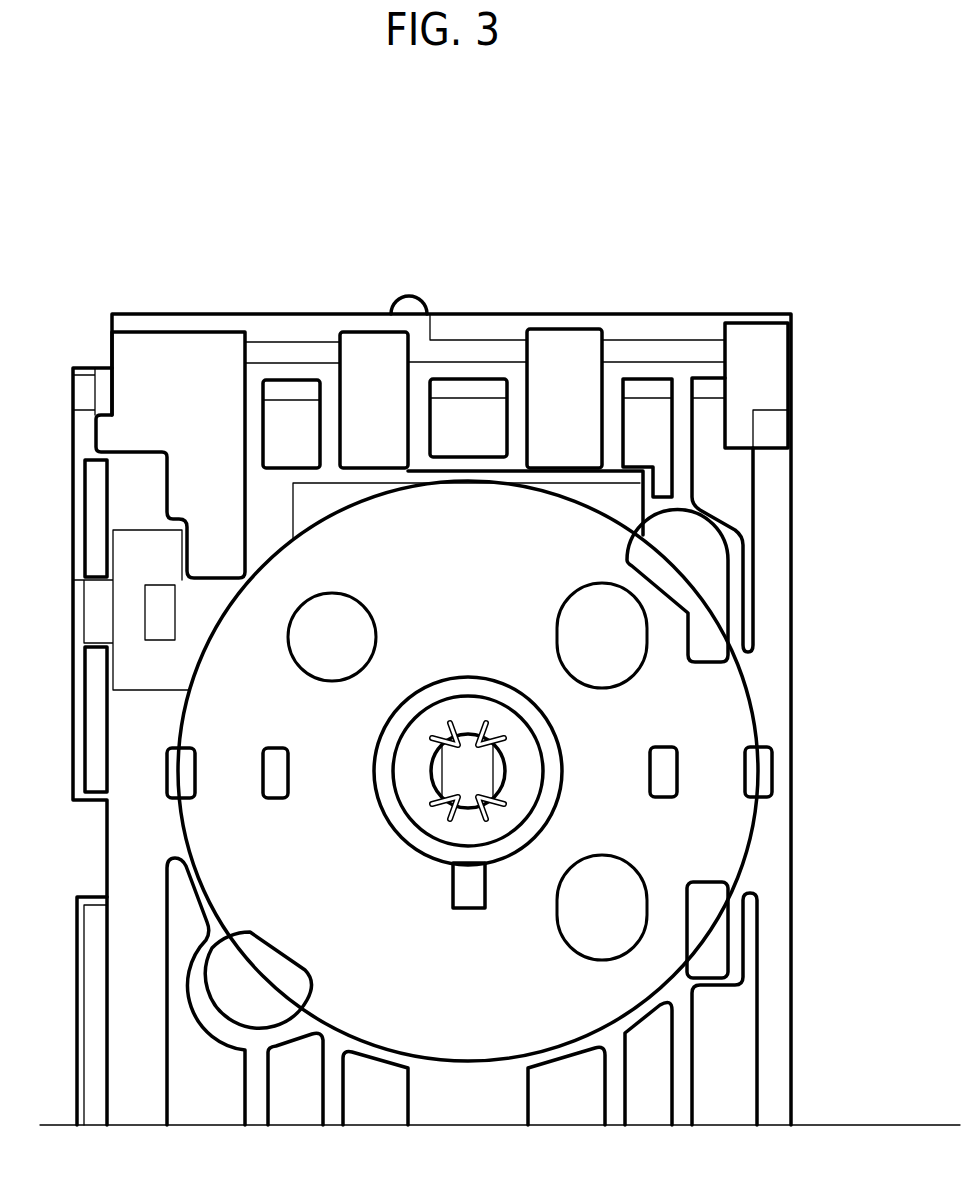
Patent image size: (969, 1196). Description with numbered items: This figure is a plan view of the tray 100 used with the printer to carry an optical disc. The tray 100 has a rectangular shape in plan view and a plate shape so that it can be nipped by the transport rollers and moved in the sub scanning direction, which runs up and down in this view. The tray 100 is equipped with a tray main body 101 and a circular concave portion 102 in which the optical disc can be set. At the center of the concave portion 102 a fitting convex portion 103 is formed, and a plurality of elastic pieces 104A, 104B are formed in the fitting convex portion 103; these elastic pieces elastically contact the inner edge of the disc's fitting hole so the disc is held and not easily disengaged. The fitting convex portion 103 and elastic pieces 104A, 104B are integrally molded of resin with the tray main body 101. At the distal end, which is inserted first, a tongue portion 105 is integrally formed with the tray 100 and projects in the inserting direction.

The tray 100 is at (461, 207).
The tray main body 101 is at (792, 903).
The concave portion 102 is at (734, 720).
The fitting convex portion 103 is at (468, 727).
The elastic piece 104A is at (493, 735).
The elastic piece 104B is at (442, 737).
The tongue portion 105 is at (415, 298).